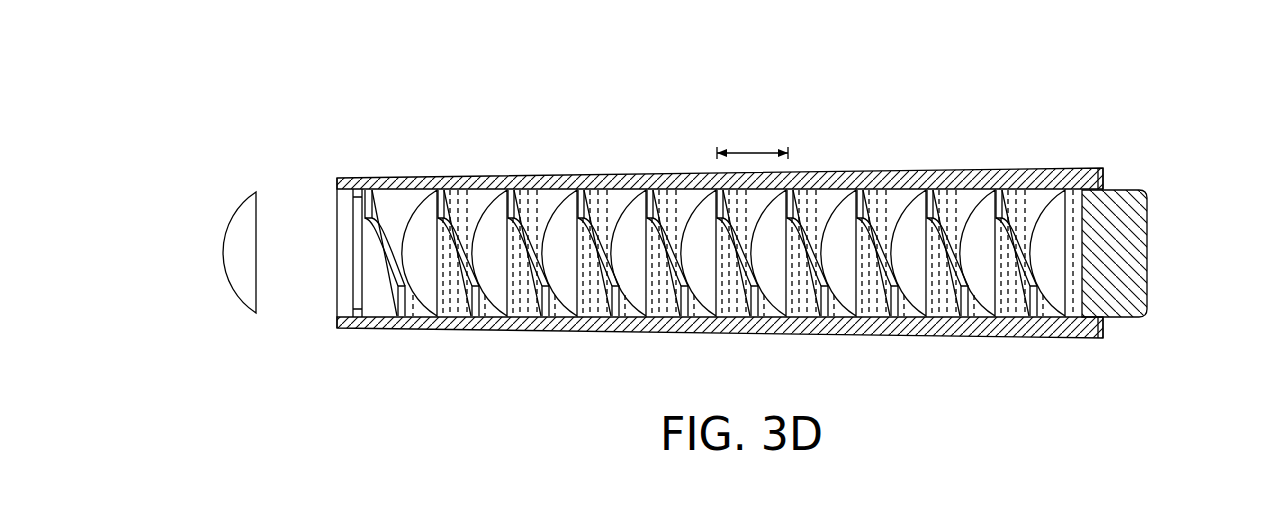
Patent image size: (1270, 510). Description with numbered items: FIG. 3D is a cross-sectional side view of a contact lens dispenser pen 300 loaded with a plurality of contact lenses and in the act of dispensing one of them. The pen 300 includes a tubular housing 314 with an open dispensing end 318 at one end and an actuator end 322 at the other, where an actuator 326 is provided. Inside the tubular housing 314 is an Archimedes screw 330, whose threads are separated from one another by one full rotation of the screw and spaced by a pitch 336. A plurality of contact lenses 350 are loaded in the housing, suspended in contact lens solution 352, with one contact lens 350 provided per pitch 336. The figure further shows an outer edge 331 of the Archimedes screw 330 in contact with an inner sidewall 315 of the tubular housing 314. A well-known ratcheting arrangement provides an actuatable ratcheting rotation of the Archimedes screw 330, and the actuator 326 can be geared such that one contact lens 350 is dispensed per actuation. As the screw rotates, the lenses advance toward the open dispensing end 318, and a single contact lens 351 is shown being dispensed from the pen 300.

The pen 300 is at (863, 90).
The tubular housing 314 is at (585, 174).
The inner sidewall 315 is at (657, 192).
The dispensing end 318 is at (337, 183).
The actuator end 322 is at (1103, 178).
The actuator 326 is at (1147, 228).
The Archimedes screw 330 is at (1016, 222).
The outer edge 331 is at (684, 318).
The pitch 336 is at (752, 150).
The contact lenses 350 is at (478, 205).
The single contact lens 351 is at (235, 208).
The contact lens solution 352 is at (876, 292).